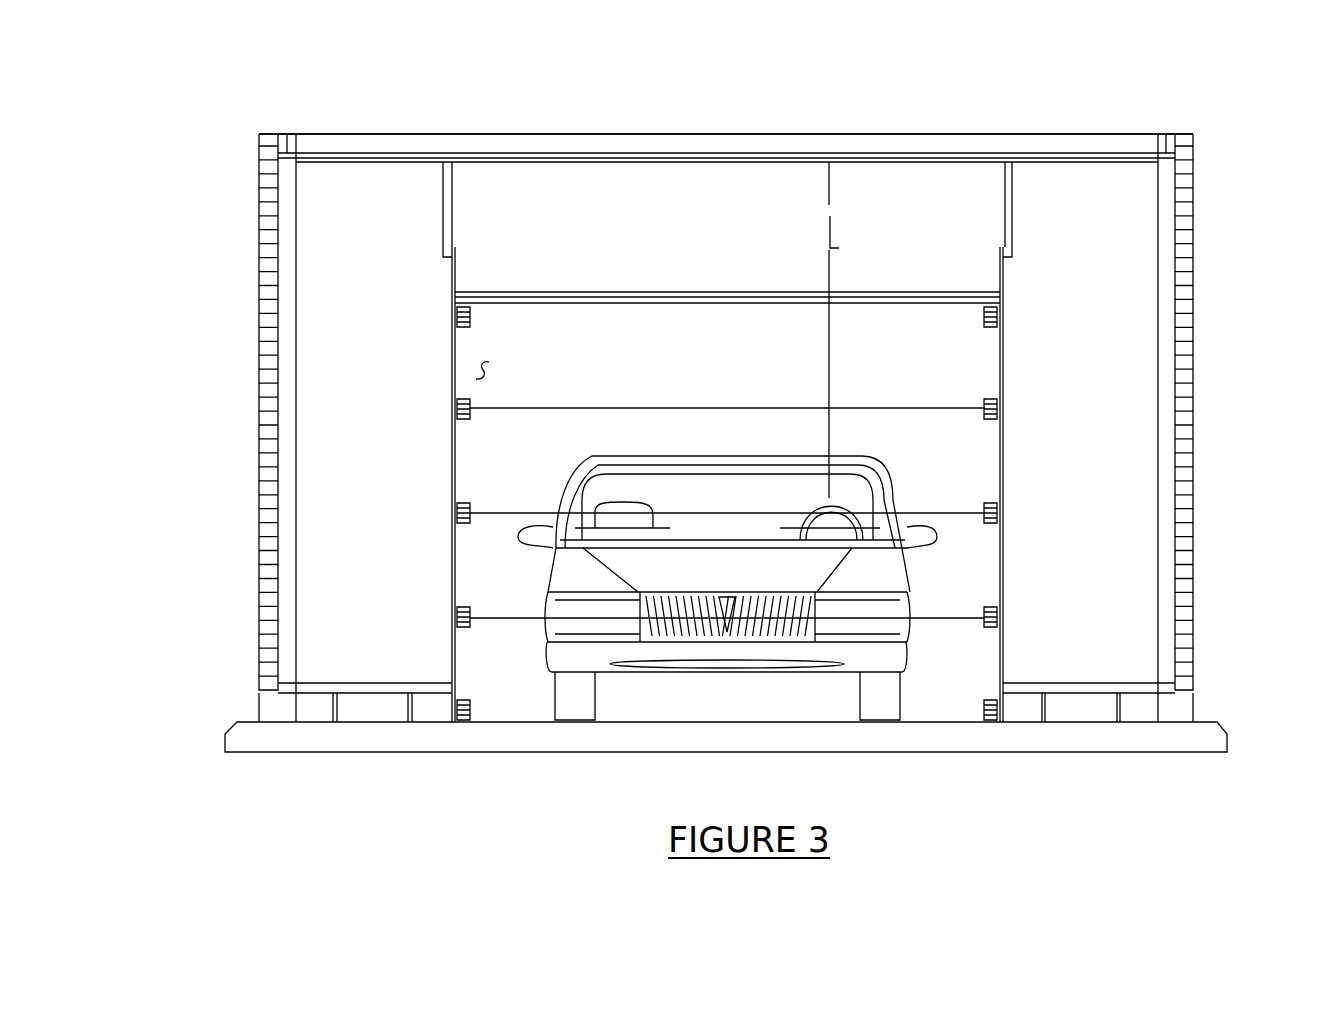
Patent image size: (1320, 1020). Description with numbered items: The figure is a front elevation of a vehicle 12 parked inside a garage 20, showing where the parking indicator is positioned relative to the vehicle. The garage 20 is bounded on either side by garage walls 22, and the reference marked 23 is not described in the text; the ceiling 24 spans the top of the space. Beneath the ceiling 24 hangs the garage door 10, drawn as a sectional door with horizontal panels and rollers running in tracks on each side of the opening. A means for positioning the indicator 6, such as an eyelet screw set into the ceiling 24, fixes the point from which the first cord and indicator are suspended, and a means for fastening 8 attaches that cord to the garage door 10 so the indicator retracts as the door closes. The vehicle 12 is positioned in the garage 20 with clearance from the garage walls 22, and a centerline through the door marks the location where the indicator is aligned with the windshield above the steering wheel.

The means for positioning the indicator 6 is at (830, 158).
The means for fastening 8 is at (828, 305).
The garage door 10 is at (475, 365).
The vehicle 12 is at (542, 573).
The garage 20 is at (1193, 500).
The garage walls 22 is at (258, 438).
The right wall 23 is at (1193, 363).
The garage ceiling 24 is at (727, 134).